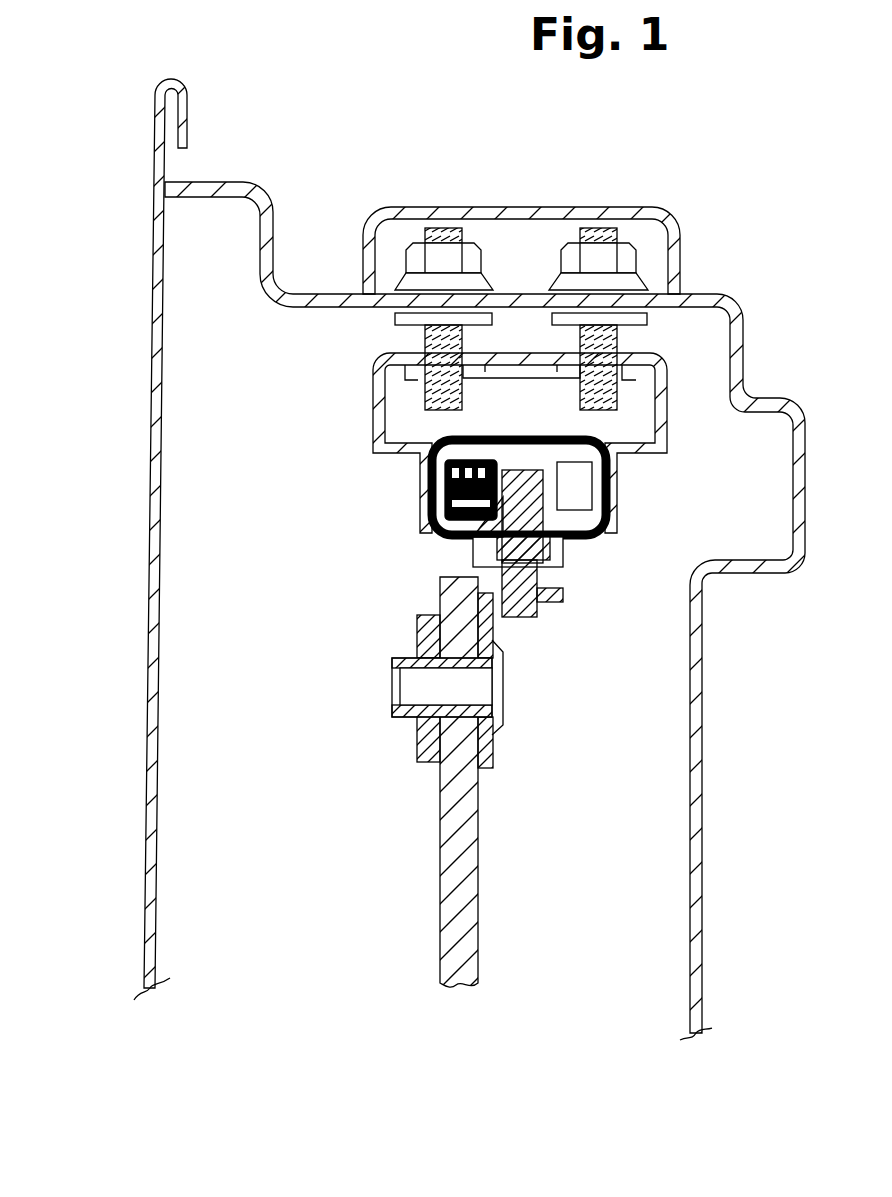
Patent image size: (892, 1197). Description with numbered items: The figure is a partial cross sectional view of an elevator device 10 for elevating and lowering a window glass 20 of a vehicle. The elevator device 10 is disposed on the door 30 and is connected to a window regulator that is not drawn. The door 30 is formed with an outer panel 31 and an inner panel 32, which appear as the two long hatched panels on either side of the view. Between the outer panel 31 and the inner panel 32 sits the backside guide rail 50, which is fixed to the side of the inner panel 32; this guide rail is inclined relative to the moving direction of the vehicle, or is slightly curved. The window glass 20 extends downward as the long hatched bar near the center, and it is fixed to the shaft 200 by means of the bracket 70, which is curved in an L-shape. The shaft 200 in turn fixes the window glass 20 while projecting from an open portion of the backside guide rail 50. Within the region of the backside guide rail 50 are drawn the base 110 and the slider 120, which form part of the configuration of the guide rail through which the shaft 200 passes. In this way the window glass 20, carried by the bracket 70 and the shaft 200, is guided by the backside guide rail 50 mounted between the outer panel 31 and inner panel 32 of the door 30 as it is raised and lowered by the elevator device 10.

The elevator device 10 is at (300, 70).
The window glass 20 is at (443, 847).
The door 30 is at (142, 352).
The outer panel 31 is at (150, 690).
The inner panel 32 is at (702, 822).
The backside guide rail 50 is at (437, 440).
The bracket 70 is at (565, 593).
The base 110 is at (617, 502).
The slider 120 is at (422, 482).
The shaft 200 is at (507, 620).